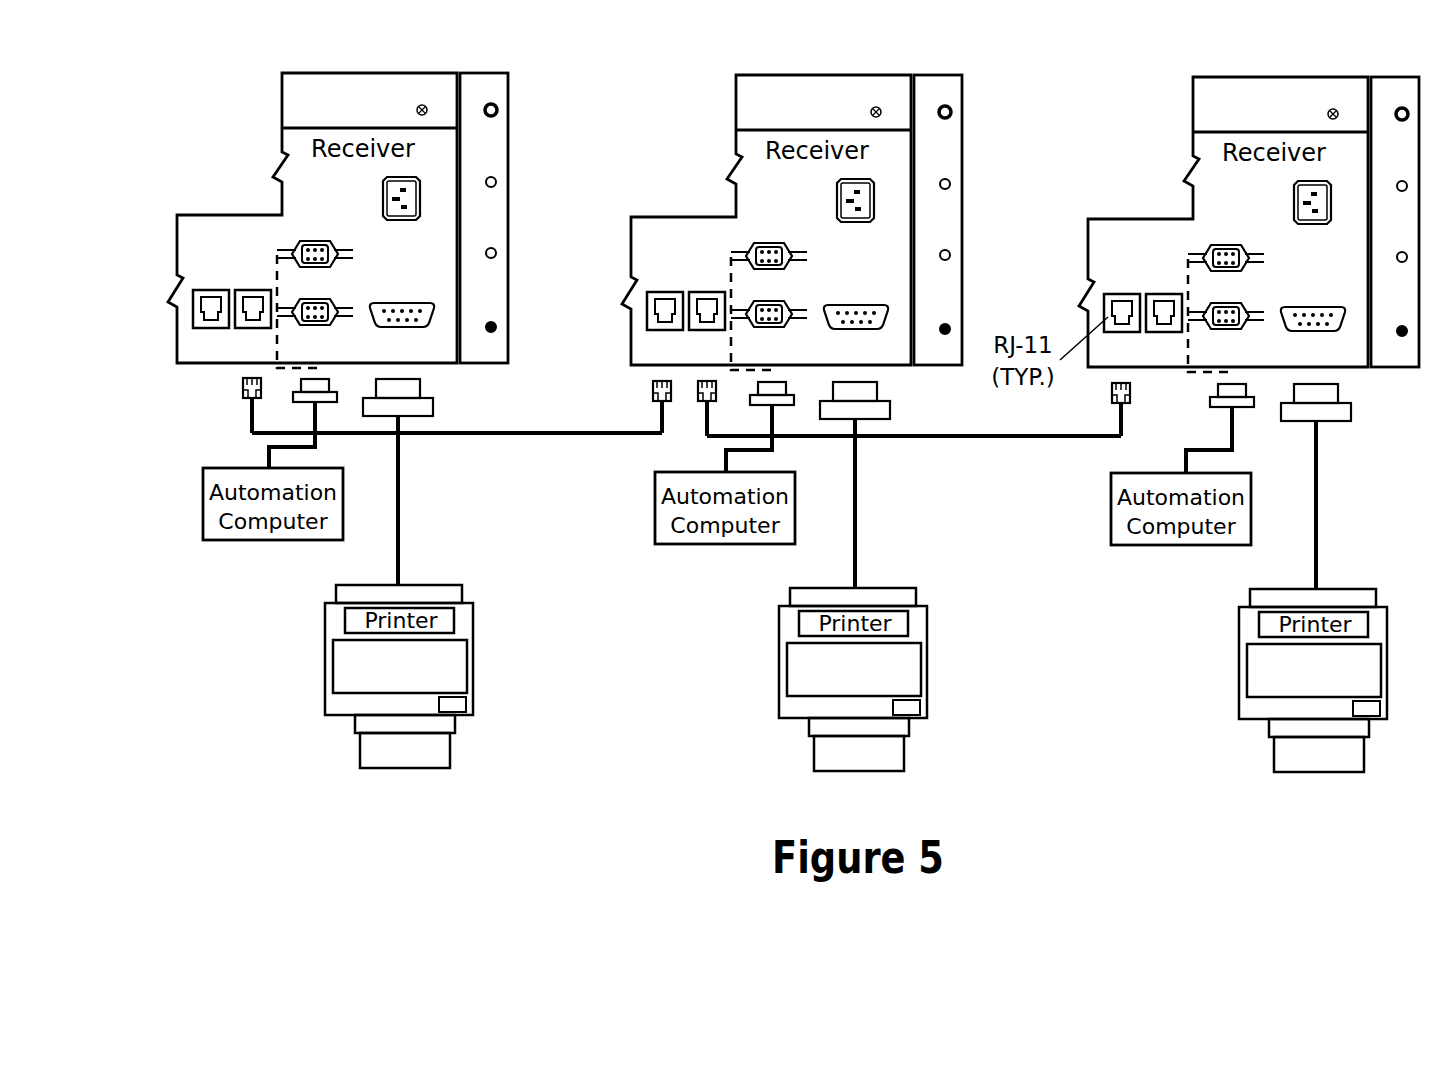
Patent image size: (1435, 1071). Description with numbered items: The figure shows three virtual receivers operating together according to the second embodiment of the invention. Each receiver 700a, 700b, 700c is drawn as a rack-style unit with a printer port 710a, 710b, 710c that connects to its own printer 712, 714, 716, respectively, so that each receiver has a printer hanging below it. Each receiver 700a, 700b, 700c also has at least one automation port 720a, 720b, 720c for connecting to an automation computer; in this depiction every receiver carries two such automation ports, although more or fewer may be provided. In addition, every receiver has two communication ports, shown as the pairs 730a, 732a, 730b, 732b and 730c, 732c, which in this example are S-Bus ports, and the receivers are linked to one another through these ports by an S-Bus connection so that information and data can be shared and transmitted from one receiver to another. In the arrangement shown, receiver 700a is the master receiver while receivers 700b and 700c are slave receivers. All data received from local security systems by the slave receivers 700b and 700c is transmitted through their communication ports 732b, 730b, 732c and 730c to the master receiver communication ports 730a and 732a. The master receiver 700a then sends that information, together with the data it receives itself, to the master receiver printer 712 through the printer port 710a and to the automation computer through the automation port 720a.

The receiver 700c is at (445, 73).
The receiver 700b is at (901, 75).
The master receiver 700a is at (1359, 77).
The automation port 720c is at (318, 241).
The automation port 720b is at (772, 243).
The automation port 720a is at (1229, 245).
The communication port 732c is at (248, 290).
The communication port 732b is at (702, 292).
The communication port 732a is at (1160, 294).
The communication port 730c is at (193, 319).
The communication port 730b is at (647, 321).
The communication port 730a is at (1136, 332).
The printer port 710c is at (412, 328).
The printer port 710b is at (866, 330).
The printer port 710a is at (1322, 332).
The printer 716 is at (445, 586).
The printer 714 is at (899, 588).
The printer 712 is at (1359, 590).